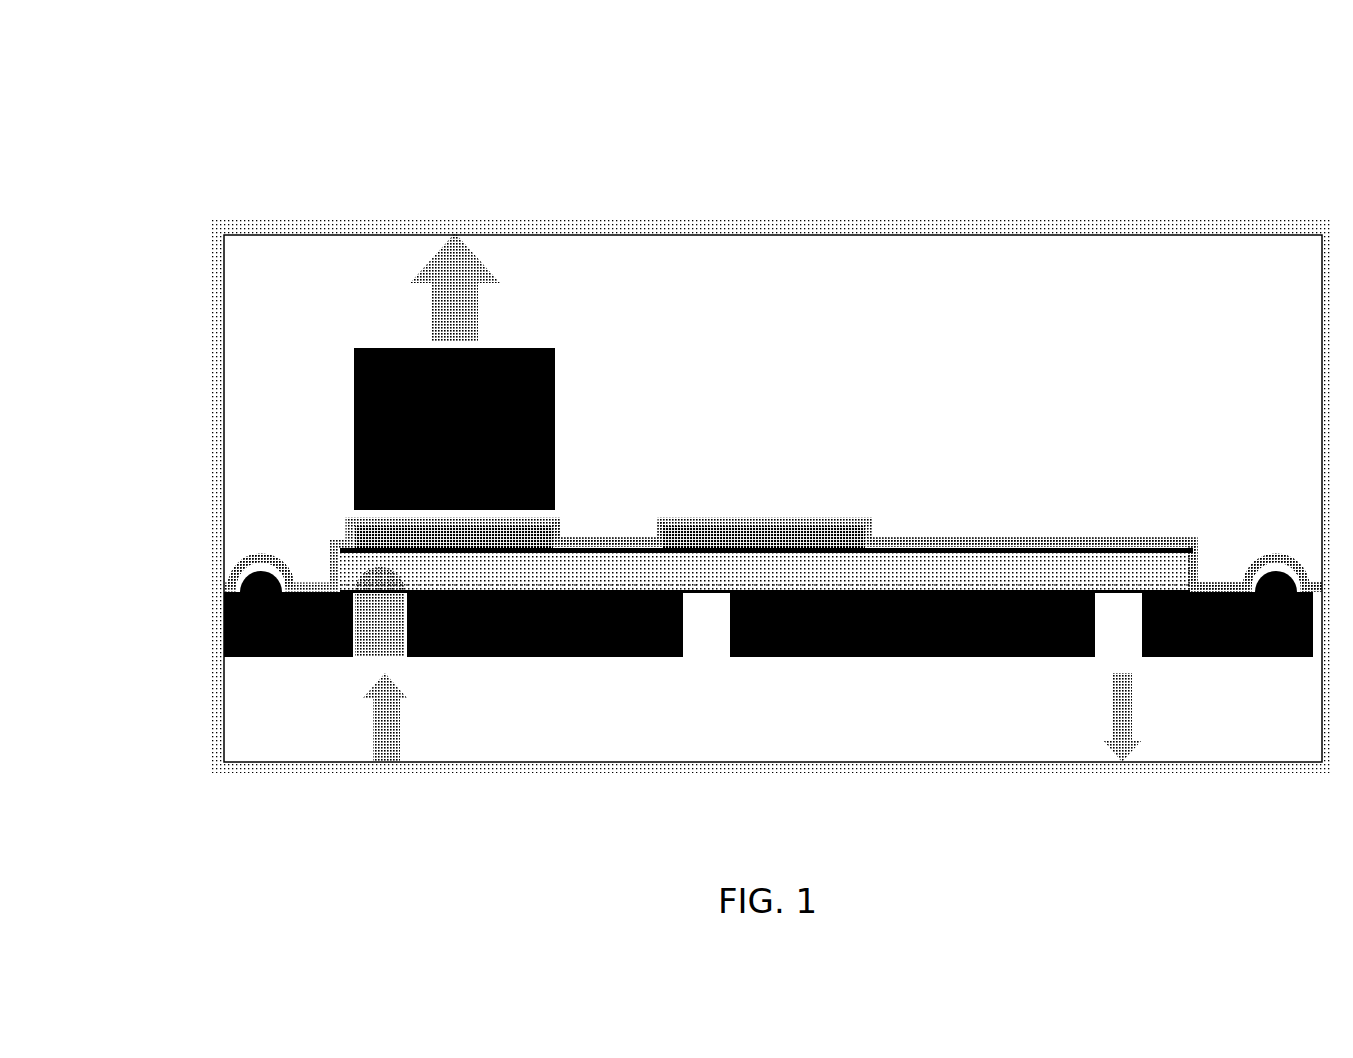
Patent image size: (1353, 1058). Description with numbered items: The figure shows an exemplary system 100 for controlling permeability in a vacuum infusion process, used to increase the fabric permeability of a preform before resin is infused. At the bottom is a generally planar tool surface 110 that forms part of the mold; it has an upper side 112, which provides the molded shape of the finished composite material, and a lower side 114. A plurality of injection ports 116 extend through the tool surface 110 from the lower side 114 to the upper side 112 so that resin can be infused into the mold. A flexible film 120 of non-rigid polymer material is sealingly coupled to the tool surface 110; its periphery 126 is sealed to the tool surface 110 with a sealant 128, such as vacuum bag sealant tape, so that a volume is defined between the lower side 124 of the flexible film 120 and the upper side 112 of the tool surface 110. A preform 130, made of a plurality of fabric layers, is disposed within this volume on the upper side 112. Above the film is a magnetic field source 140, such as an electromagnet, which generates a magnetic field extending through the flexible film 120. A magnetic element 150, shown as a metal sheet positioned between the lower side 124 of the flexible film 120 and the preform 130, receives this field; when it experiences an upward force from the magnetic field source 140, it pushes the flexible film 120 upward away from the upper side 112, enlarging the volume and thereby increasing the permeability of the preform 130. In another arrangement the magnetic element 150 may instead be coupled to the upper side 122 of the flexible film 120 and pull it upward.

The system 100 is at (183, 66).
The tool surface 110 is at (223, 627).
The upper side 112 is at (307, 563).
The lower side 114 is at (278, 676).
The injection ports 116 is at (358, 657).
The flexible film 120 is at (983, 540).
The upper side 122 is at (1128, 528).
The lower side 124 is at (1131, 555).
The periphery 126 is at (252, 557).
The sealant 128 is at (233, 583).
The preform 130 is at (893, 563).
The magnetic field source 140 is at (540, 348).
The magnetic element 150 is at (665, 528).